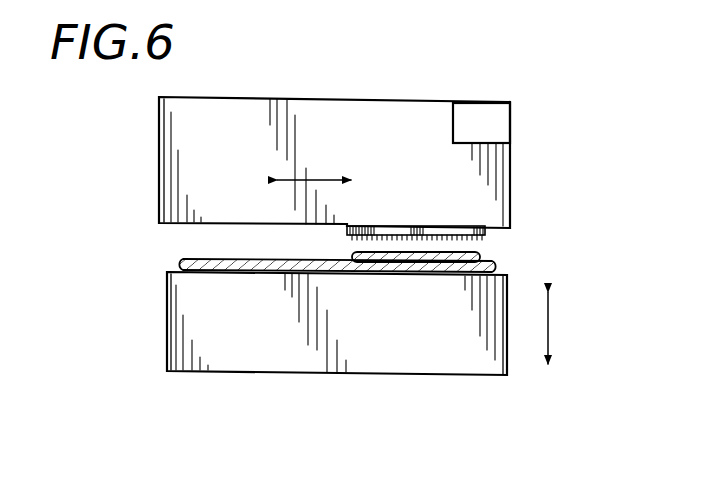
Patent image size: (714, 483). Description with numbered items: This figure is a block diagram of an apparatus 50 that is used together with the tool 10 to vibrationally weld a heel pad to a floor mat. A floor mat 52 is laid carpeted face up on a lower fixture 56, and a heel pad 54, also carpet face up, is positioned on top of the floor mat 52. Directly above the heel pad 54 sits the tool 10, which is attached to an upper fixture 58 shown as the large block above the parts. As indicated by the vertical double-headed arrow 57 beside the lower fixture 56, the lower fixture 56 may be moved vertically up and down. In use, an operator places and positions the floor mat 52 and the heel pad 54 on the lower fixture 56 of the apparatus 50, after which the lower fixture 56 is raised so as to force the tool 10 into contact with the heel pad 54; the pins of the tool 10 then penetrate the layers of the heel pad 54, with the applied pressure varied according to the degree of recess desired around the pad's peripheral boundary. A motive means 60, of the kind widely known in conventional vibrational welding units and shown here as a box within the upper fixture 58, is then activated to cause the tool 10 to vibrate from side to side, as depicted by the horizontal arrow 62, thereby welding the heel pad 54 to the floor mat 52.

The apparatus 50 is at (110, 377).
The tool 10 is at (485, 233).
The floor mat 52 is at (498, 267).
The heel pad 54 is at (481, 257).
The lower fixture 56 is at (420, 352).
The vertical movement of lower fixture 57 is at (549, 324).
The upper fixture 58 is at (426, 198).
The motive means 60 is at (501, 136).
The arrow 62 is at (316, 178).